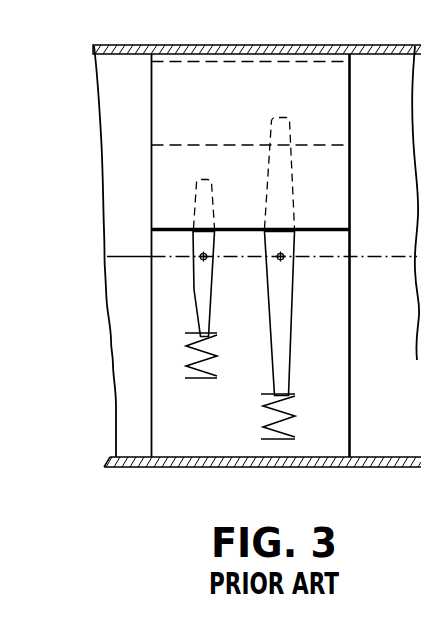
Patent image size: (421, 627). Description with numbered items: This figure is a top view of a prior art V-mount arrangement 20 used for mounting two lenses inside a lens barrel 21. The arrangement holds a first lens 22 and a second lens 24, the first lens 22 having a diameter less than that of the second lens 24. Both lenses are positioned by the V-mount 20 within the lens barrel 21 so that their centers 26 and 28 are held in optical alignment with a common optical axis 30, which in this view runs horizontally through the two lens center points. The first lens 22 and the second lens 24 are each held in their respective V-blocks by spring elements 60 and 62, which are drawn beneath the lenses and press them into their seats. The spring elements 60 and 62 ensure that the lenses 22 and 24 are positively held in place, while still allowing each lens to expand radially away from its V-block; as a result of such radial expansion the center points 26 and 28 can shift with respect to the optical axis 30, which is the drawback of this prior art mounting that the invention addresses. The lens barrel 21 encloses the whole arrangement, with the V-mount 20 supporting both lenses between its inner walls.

The V-mount arrangement 20 is at (133, 147).
The lens barrel 21 is at (238, 45).
The first lens 22 is at (193, 285).
The second lens 24 is at (291, 336).
The center of the first lens 26 is at (206, 260).
The center of the second lens 28 is at (283, 259).
The optical axis 30 is at (173, 255).
The spring element 60 is at (217, 352).
The spring element 62 is at (296, 417).